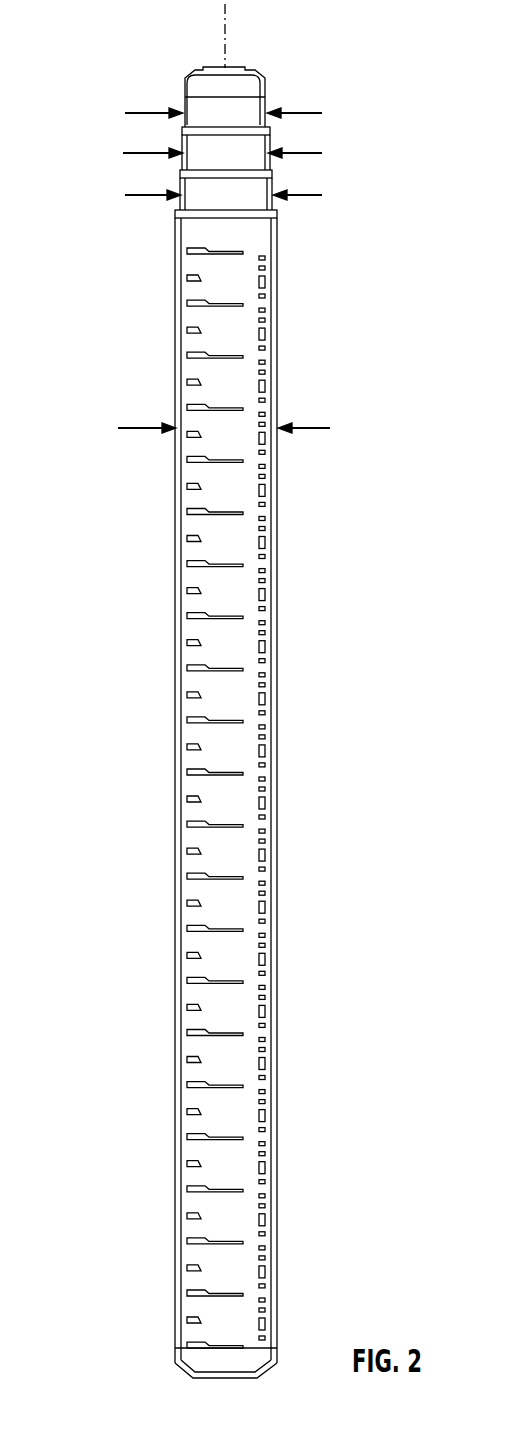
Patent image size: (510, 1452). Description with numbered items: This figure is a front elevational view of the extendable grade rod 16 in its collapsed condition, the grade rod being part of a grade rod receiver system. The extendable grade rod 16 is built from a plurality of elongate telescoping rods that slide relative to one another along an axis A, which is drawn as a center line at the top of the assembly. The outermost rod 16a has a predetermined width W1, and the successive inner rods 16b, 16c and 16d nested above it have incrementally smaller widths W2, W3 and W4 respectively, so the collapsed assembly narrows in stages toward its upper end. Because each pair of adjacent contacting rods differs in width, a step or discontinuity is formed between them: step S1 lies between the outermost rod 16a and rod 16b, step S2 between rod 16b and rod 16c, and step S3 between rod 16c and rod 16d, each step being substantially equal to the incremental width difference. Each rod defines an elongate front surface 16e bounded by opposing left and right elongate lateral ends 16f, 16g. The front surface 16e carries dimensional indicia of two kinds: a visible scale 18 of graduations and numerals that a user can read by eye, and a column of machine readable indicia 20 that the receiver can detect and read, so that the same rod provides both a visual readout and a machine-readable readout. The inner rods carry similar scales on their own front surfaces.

The axis A is at (225, 48).
The extendable grade rod 16 is at (214, 714).
The outermost rod 16a is at (175, 752).
The inner rod 16b is at (228, 193).
The inner rod 16c is at (208, 153).
The inner rod 16d is at (207, 90).
The elongate front surface 16e is at (193, 347).
The left elongate lateral end 16f is at (175, 513).
The right elongate lateral end 16g is at (277, 620).
The visible scale 18 is at (223, 908).
The machine readable indicia 20 is at (262, 758).
The step S1 is at (176, 215).
The step S2 is at (187, 175).
The step S3 is at (188, 132).
The width W1 is at (310, 428).
The width W2 is at (302, 195).
The width W3 is at (302, 153).
The width W4 is at (302, 113).